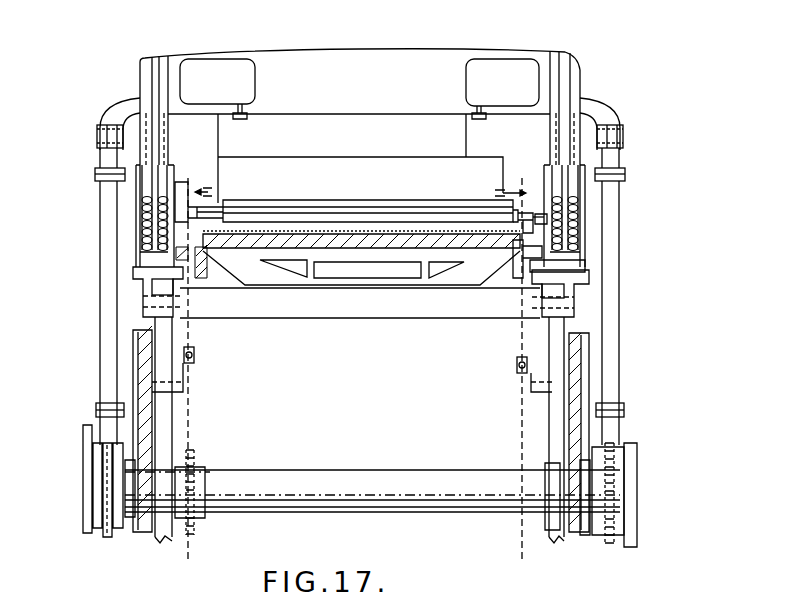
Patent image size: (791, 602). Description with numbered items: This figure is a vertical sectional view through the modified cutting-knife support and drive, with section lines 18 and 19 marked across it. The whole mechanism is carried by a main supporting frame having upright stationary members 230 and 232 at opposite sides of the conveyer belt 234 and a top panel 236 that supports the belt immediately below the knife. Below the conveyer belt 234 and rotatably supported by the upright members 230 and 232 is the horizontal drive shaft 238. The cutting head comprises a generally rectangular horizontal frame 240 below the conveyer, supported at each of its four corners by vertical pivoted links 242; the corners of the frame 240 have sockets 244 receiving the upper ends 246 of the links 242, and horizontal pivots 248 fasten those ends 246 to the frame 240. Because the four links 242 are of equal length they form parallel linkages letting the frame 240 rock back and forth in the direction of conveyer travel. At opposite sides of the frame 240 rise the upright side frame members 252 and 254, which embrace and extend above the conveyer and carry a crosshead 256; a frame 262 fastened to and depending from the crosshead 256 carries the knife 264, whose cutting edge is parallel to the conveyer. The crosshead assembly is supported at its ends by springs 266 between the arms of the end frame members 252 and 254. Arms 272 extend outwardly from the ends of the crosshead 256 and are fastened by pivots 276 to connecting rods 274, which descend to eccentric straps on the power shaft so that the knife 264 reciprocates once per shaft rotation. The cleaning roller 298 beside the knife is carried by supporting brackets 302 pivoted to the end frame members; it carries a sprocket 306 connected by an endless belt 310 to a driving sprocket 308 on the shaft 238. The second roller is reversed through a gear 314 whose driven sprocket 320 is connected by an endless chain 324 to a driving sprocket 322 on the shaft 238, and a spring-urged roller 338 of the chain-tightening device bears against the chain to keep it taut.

The crosshead 256 is at (333, 50).
The upright side frame member 252 is at (140, 70).
The upright side frame member 254 is at (575, 90).
The arm 272 is at (110, 106).
The pivot 276 is at (97, 138).
The connecting rod 274 is at (108, 390).
The spring 266 is at (142, 240).
The socket 244 is at (160, 283).
The upper end of link 246 is at (160, 290).
The horizontal pivot 248 is at (140, 305).
The upright stationary member 230 is at (142, 355).
The upright stationary member 232 is at (580, 368).
The frame 262 is at (285, 160).
The section line 18 is at (208, 358).
The section line 19 is at (510, 360).
The sprocket 306 is at (220, 203).
The knife 264 is at (262, 218).
The cleaning roller 298 is at (418, 204).
The top panel 236 is at (365, 204).
The supporting bracket 302 is at (540, 204).
The conveyer belt 234 is at (305, 231).
The driven sprocket 320 is at (420, 266).
The gear 314 is at (545, 246).
The horizontal frame 240 is at (332, 310).
The roller 338 is at (195, 353).
The endless chain 324 is at (520, 385).
The endless belt 310 is at (195, 383).
The vertical pivoted link 242 is at (167, 418).
The horizontal drive shaft 238 is at (272, 470).
The driving sprocket 308 is at (194, 460).
The driving sprocket 322 is at (525, 530).